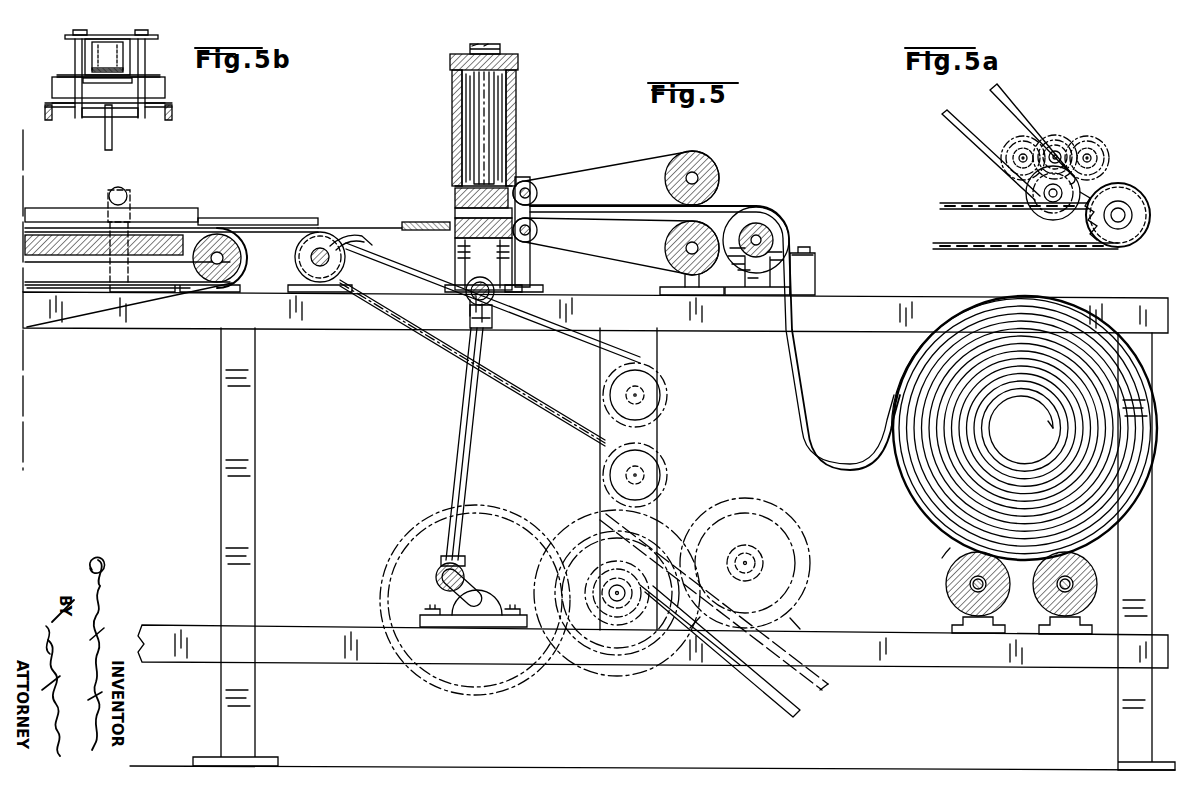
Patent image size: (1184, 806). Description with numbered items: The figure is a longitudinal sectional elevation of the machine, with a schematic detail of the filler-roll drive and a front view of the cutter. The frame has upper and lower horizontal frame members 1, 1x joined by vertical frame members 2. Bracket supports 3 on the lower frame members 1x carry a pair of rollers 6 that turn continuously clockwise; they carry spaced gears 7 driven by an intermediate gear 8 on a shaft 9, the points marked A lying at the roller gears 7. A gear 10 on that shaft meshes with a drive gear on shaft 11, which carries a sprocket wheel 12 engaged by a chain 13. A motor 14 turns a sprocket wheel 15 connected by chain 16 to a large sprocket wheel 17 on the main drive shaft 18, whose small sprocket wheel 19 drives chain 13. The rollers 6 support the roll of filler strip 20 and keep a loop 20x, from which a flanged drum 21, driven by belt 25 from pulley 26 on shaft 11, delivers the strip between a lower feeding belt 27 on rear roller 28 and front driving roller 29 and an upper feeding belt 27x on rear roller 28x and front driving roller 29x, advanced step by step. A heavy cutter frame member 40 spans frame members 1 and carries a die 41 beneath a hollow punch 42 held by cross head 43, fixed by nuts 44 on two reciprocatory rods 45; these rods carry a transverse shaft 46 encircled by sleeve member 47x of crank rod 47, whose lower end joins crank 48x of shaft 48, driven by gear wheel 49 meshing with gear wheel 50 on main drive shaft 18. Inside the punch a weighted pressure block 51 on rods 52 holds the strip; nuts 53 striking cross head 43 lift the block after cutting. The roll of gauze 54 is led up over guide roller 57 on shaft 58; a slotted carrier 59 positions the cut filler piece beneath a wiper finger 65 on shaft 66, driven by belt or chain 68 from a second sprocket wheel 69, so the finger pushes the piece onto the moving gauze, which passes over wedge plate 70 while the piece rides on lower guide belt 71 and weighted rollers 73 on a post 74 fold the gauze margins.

In FIG. 5, the upper horizontal frame member 1 is at (595, 312).
In FIG. 5B, the upper horizontal frame member 1 is at (46, 112).
In FIG. 5, the lower horizontal frame member 1x is at (653, 646).
In FIG. 5, the vertical frame member 2 is at (652, 549).
In FIG. 5, the bracket support 3 is at (983, 636).
In FIG. 5, the roller 6 is at (950, 588).
In FIG. 5A, the roller 6 is at (1012, 145).
In FIG. 5A, the spaced gear 7 is at (1013, 160).
In FIG. 5A, the intermediate gear 8 is at (1062, 150).
In FIG. 5A, the gear 9 is at (1053, 135).
In FIG. 5A, the gear 10 is at (1060, 140).
In FIG. 5A, the shaft 11 is at (1098, 185).
In FIG. 5A, the sprocket wheel 12 is at (1035, 193).
In FIG. 5, the chain 13 is at (752, 695).
In FIG. 5A, the chain 13 is at (1025, 226).
In FIG. 5, the motor 14 is at (796, 525).
In FIG. 5, the sprocket wheel 15 is at (758, 563).
In FIG. 5, the chain 16 is at (668, 525).
In FIG. 5, the large sprocket wheel 17 is at (600, 566).
In FIG. 5, the main drive shaft 18 is at (612, 600).
In FIG. 5, the small sprocket wheel 19 is at (617, 585).
In FIG. 5, the roll of filler strip 20 is at (1145, 410).
In FIG. 5, the loop of filler strip 20x is at (810, 410).
In FIG. 5, the supporting flanged drum 21 is at (790, 228).
In FIG. 5A, the belt 25 is at (1010, 106).
In FIG. 5A, the pulley 26 is at (1060, 218).
In FIG. 5, the lower feeding belt 27 is at (606, 258).
In FIG. 5, the upper feeding belt 27x is at (608, 166).
In FIG. 5, the rear supporting roller 28 is at (537, 231).
In FIG. 5, the rear supporting roller 28x is at (537, 195).
In FIG. 5, the front supporting and driving roller 29 is at (666, 244).
In FIG. 5, the front supporting and driving roller 29x is at (665, 182).
In FIG. 5, the cutter frame member 40 is at (456, 262).
In FIG. 5B, the cutter frame member 40 is at (165, 90).
In FIG. 5, the die 41 is at (455, 213).
In FIG. 5B, the die 41 is at (132, 80).
In FIG. 5, the punch 42 is at (452, 120).
In FIG. 5B, the punch 42 is at (85, 58).
In FIG. 5, the cross head 43 is at (450, 62).
In FIG. 5B, the cross head 43 is at (158, 38).
In FIG. 5, the nut 44 is at (500, 51).
In FIG. 5, the reciprocatory rod 45 is at (496, 94).
In FIG. 5B, the reciprocatory rod 45 is at (125, 70).
In FIG. 5, the transverse shaft 46 is at (494, 288).
In FIG. 5B, the transverse shaft 46 is at (120, 114).
In FIG. 5, the crank rod 47 is at (466, 422).
In FIG. 5B, the crank rod 47 is at (105, 130).
In FIG. 5, the sleeve member 47x is at (470, 314).
In FIG. 5, the shaft 48 is at (437, 585).
In FIG. 5, the crank 48x is at (468, 583).
In FIG. 5, the gear wheel 49 is at (522, 686).
In FIG. 5, the gear wheel 50 is at (620, 640).
In FIG. 5, the weighted pressure block 51 is at (508, 180).
In FIG. 5B, the weighted pressure block 51 is at (75, 75).
In FIG. 5, the rod 52 is at (486, 120).
In FIG. 5, the nut 53 is at (472, 50).
In FIG. 5B, the nut 53 is at (78, 30).
In FIG. 5, the roll of gauze 54 is at (85, 322).
In FIG. 5, the guide roller 57 is at (246, 258).
In FIG. 5, the shaft 58 is at (194, 262).
In FIG. 5, the carrier 59 is at (405, 226).
In FIG. 5, the wiper finger 65 is at (348, 234).
In FIG. 5, the shaft 66 is at (312, 266).
In FIG. 5, the belt or chain 68 is at (541, 392).
In FIG. 5, the second sprocket wheel 69 is at (668, 390).
In FIG. 5, the wedge plate 70 is at (228, 218).
In FIG. 5, the lower guide belt 71 is at (100, 280).
In FIG. 5, the weighted roller 73 is at (130, 196).
In FIG. 5, the post 74 is at (108, 196).
In FIG. 5A, the shaft A is at (1017, 154).